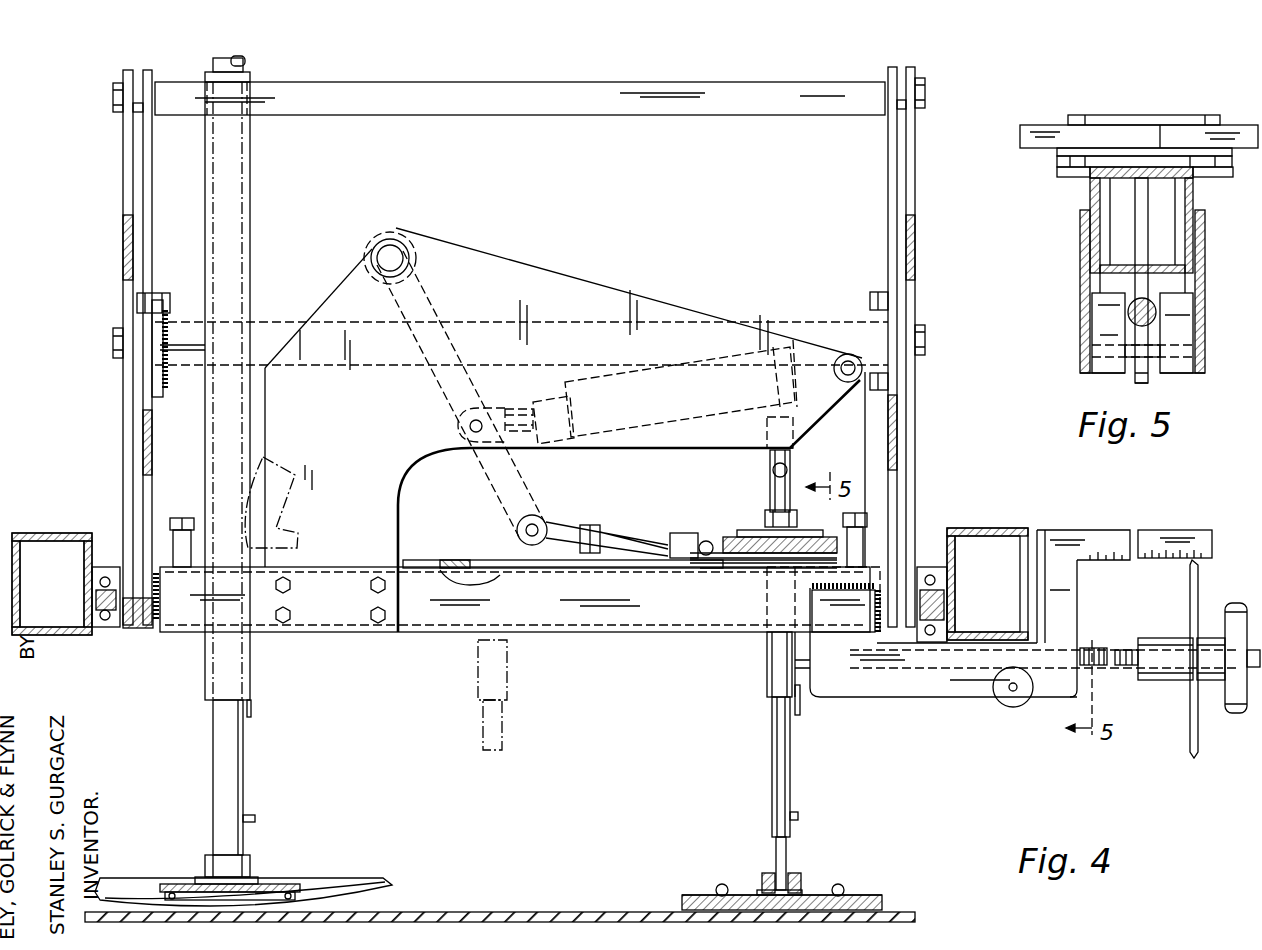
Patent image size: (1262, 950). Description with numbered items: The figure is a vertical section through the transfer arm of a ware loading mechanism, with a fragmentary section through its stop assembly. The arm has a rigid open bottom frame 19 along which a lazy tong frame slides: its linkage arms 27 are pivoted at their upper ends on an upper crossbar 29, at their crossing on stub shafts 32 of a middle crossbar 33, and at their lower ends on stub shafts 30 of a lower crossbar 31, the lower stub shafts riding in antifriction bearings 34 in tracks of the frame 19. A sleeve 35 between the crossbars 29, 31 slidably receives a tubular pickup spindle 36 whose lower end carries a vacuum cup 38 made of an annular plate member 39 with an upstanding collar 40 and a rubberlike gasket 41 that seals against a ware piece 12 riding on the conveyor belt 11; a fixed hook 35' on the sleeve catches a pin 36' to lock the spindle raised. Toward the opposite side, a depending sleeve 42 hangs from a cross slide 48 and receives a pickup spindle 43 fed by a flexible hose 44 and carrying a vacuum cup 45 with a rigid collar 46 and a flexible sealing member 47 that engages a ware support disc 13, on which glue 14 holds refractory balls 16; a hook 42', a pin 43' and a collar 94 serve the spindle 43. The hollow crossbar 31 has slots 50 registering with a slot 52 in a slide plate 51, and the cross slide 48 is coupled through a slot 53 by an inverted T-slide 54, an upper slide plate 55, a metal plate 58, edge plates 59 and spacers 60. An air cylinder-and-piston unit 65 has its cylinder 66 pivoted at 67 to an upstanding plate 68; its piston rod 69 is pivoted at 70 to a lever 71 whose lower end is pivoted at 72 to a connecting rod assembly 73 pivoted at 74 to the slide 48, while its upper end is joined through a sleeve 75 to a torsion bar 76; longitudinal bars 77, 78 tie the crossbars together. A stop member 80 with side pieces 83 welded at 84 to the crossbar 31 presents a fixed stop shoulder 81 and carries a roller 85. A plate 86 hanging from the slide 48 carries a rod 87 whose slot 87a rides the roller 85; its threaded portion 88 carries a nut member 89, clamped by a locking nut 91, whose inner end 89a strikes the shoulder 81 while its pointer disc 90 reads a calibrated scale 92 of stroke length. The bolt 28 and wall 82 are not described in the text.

In FIG. 4, the conveyor belt 11 is at (496, 912).
In FIG. 4, the ware piece 12 is at (385, 878).
In FIG. 4, the ware support disc 13 is at (682, 897).
In FIG. 4, the household glue 14 is at (860, 893).
In FIG. 4, the ball 16 is at (719, 884).
In FIG. 4, the bottom frame 19 is at (45, 533).
In FIG. 4, the linkage arms 27 is at (123, 205).
In FIG. 4, the bolts 28 is at (113, 98).
In FIG. 4, the upper crossbar 29 is at (580, 116).
In FIG. 4, the stub shaft 30 is at (153, 628).
In FIG. 4, the lower crossbar 31 is at (425, 628).
In FIG. 5, the lower crossbar 31 is at (1198, 190).
In FIG. 4, the stub shaft 32 is at (113, 342).
In FIG. 4, the middle crossbar 33 is at (270, 325).
In FIG. 4, the antifriction bearing 34 is at (105, 640).
In FIG. 4, the sleeve 35 is at (255, 386).
In FIG. 4, the fixed hook 35' is at (279, 706).
In FIG. 4, the pickup spindle 36 is at (254, 454).
In FIG. 4, the laterally projecting pin 36' is at (276, 799).
In FIG. 4, the vacuum cup 38 is at (203, 862).
In FIG. 4, the annular plate member 39 is at (285, 885).
In FIG. 4, the upstanding collar 40 is at (258, 877).
In FIG. 4, the annular gasket 41 is at (165, 893).
In FIG. 4, the depending sleeve 42 is at (752, 677).
In FIG. 4, the hook 42' is at (816, 718).
In FIG. 4, the pickup spindle 43 is at (667, 653).
In FIG. 4, the laterally projecting pin 43' is at (826, 801).
In FIG. 4, the flexible hose 44 is at (768, 450).
In FIG. 4, the vacuum cup 45 is at (802, 880).
In FIG. 4, the rigid annular collar 46 is at (770, 880).
In FIG. 4, the flexible annular sealing member 47 is at (760, 891).
In FIG. 4, the cross slide 48 is at (730, 540).
In FIG. 5, the cross slide 48 is at (1028, 130).
In FIG. 4, the longitudinal slot 50 is at (488, 568).
In FIG. 5, the longitudinal slot 50 is at (1122, 185).
In FIG. 4, the slide plate 51 is at (452, 560).
In FIG. 4, the longitudinal slot 52 is at (475, 565).
In FIG. 5, the longitudinal slot 52 is at (1167, 165).
In FIG. 4, the longitudinal slot 53 is at (760, 560).
In FIG. 4, the inverted T-slide 54 is at (705, 562).
In FIG. 5, the inverted T-slide 54 is at (1057, 152).
In FIG. 4, the slide plate 55 is at (798, 518).
In FIG. 5, the slide plate 55 is at (1200, 118).
In FIG. 4, the metal plate 58 is at (730, 566).
In FIG. 5, the metal plate 58 is at (1057, 163).
In FIG. 4, the metal plate 59 is at (682, 566).
In FIG. 5, the metal plate 59 is at (1080, 185).
In FIG. 5, the Teflon spacer 60 is at (1062, 173).
In FIG. 4, the air cylinder-and-piston unit 65 is at (648, 448).
In FIG. 4, the cylinder 66 is at (650, 376).
In FIG. 4, the pivotal connection 67 is at (848, 385).
In FIG. 4, the upstanding plate 68 is at (555, 285).
In FIG. 4, the piston rod 69 is at (519, 410).
In FIG. 4, the pivotal connection 70 is at (458, 432).
In FIG. 4, the lever 71 is at (300, 493).
In FIG. 4, the pivotal connection 72 is at (541, 524).
In FIG. 4, the connecting rod assembly 73 is at (627, 535).
In FIG. 4, the pivotal connection 74 is at (703, 540).
In FIG. 4, the sleeve 75 is at (388, 232).
In FIG. 4, the torsion bar 76 is at (398, 256).
In FIG. 4, the longitudinal bar 77 is at (181, 548).
In FIG. 4, the longitudinal bar 78 is at (867, 535).
In FIG. 4, the stop member 80 is at (968, 705).
In FIG. 5, the stop member 80 is at (1192, 382).
In FIG. 4, the fixed stop shoulder 81 is at (1077, 680).
In FIG. 5, the fixed stop shoulder 81 is at (1095, 325).
In FIG. 5, the wall 82 is at (1082, 285).
In FIG. 4, the side pieces 83 is at (925, 696).
In FIG. 5, the side pieces 83 is at (1203, 290).
In FIG. 4, the weld 84 is at (846, 596).
In FIG. 5, the weld 84 is at (1085, 215).
In FIG. 4, the roller 85 is at (1010, 700).
In FIG. 5, the roller 85 is at (1137, 378).
In FIG. 4, the plate 86 is at (795, 642).
In FIG. 5, the plate 86 is at (1146, 235).
In FIG. 4, the rod 87 is at (808, 668).
In FIG. 5, the longitudinal slot 87a is at (1150, 332).
In FIG. 4, the screw-threaded portion 88 is at (1090, 648).
In FIG. 5, the screw-threaded portion 88 is at (1135, 302).
In FIG. 4, the nut member 89 is at (1178, 682).
In FIG. 4, the inner end 89a is at (1140, 676).
In FIG. 4, the pointer disc 90 is at (1198, 732).
In FIG. 4, the locking nut 91 is at (1235, 603).
In FIG. 4, the calibrated scale 92 is at (1108, 530).
In FIG. 4, the collar 94 is at (774, 470).